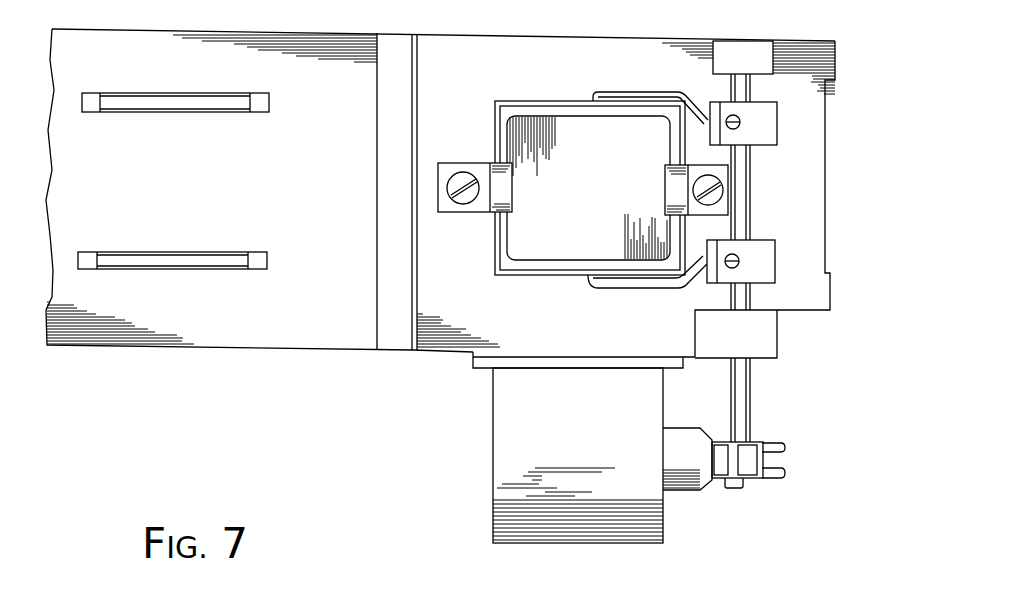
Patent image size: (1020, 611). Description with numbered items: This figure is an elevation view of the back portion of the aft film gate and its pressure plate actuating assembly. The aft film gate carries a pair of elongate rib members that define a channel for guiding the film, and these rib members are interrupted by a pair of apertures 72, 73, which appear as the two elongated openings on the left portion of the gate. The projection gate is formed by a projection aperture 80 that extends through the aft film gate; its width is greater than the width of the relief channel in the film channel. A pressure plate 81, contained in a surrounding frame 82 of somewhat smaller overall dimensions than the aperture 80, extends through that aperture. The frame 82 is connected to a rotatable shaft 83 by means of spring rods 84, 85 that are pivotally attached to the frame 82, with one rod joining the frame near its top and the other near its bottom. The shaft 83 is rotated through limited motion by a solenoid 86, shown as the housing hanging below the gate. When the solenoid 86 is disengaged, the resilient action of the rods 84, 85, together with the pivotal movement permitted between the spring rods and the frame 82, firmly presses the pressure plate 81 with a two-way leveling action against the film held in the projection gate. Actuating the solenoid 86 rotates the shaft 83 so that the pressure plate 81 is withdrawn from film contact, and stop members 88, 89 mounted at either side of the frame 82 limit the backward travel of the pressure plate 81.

The aperture 72 is at (189, 95).
The aperture 73 is at (190, 270).
The projection aperture 80 is at (497, 248).
The pressure plate 81 is at (577, 191).
The frame 82 is at (549, 100).
The rotatable shaft 83 is at (754, 176).
The spring rod 84 is at (618, 92).
The spring rod 85 is at (631, 290).
The solenoid 86 is at (492, 454).
The stop member 88 is at (460, 162).
The stop member 89 is at (665, 200).